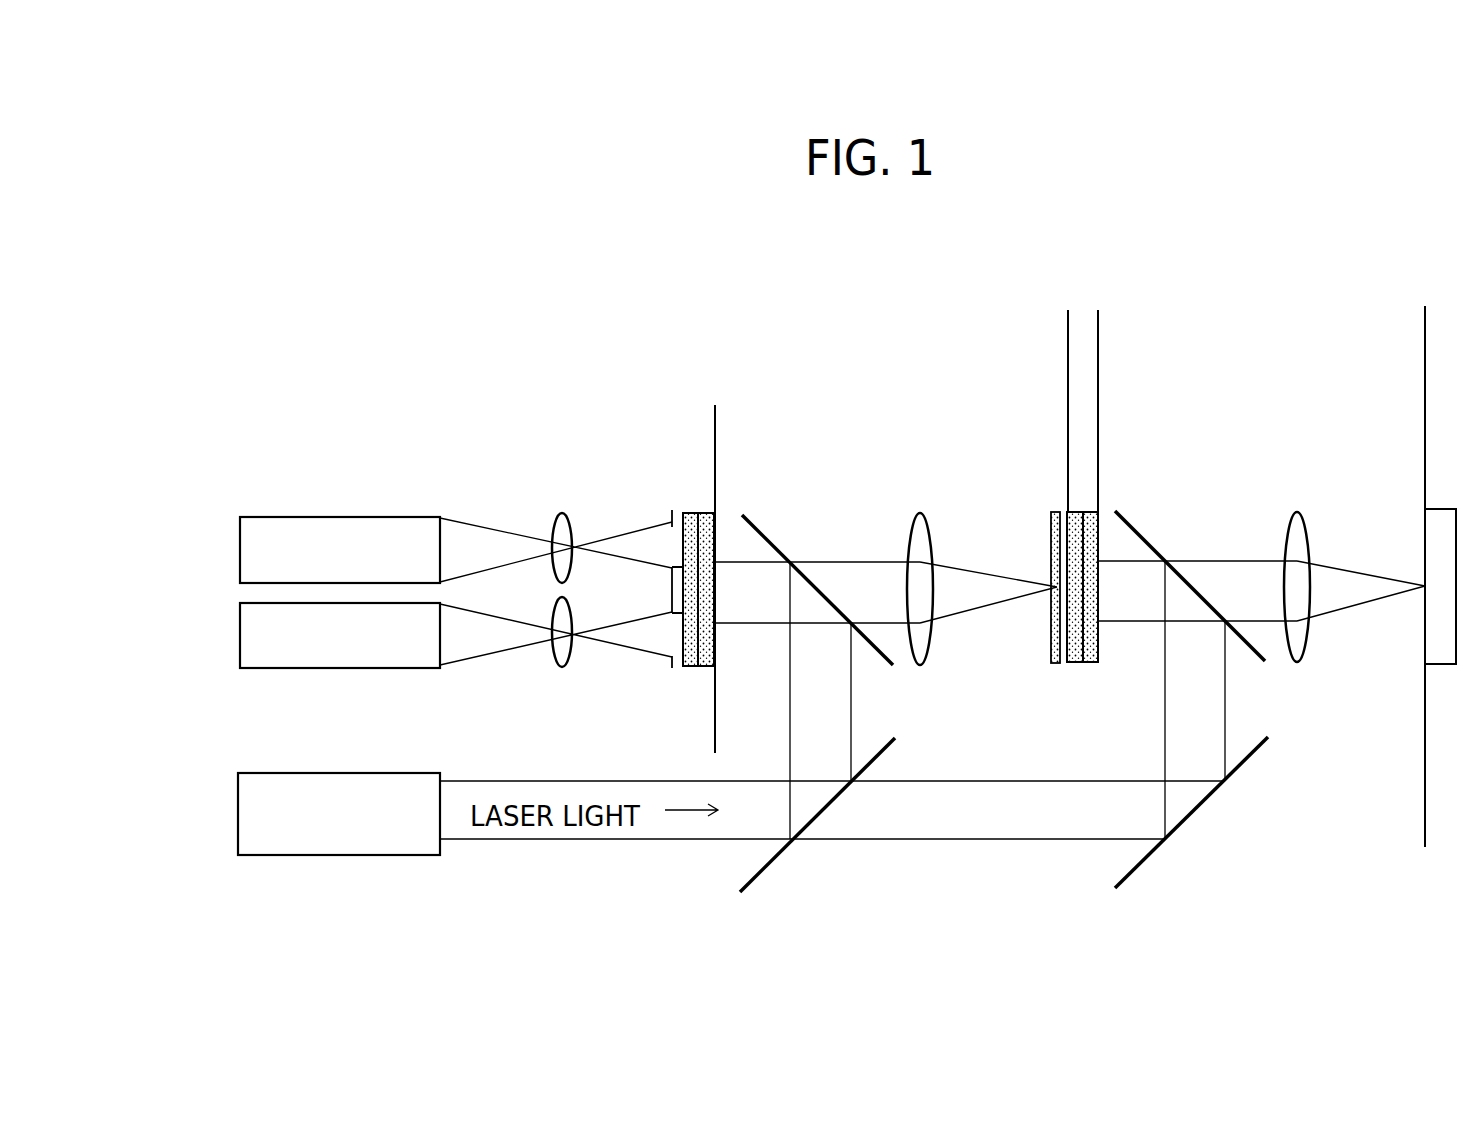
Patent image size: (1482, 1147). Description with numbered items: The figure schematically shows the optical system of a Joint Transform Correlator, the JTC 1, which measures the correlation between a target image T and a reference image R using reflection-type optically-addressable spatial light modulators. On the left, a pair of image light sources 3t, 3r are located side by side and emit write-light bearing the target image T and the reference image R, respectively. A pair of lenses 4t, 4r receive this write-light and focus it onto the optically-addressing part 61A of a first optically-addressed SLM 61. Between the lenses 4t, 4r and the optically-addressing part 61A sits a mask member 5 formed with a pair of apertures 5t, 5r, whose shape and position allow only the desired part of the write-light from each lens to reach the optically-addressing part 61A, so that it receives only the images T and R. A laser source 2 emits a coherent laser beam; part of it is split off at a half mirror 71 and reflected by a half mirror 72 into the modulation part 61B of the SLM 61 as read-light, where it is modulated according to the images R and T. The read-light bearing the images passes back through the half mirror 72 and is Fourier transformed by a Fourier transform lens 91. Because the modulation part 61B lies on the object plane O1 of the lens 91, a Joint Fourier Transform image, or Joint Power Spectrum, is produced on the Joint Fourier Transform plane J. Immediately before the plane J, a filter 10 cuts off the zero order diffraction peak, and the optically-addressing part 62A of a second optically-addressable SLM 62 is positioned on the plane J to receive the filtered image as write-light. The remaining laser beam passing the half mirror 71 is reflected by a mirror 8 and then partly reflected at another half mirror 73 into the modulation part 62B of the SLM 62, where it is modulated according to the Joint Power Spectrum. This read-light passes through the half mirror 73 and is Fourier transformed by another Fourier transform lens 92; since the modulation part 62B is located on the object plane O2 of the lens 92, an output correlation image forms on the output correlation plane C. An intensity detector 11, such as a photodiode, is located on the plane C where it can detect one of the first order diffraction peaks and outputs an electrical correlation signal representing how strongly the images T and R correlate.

The Joint Transform Correlator 1 is at (1198, 290).
The laser source 2 is at (238, 815).
The image light source 3t is at (240, 548).
The image light source 3r is at (240, 633).
The lens 4t is at (562, 512).
The lens 4r is at (562, 668).
The mask member 5 is at (631, 531).
The aperture 5t is at (667, 547).
The aperture 5r is at (670, 633).
The first optically-addressed SLM 61 is at (669, 524).
The optically-addressing part 61A is at (692, 512).
The modulation part 61B is at (707, 512).
The second optically-addressable SLM 62 is at (1057, 639).
The optically-addressing part 62A is at (1072, 665).
The modulation part 62B is at (1092, 665).
The half mirror 71 is at (770, 863).
The half mirror 72 is at (762, 532).
The half mirror 73 is at (1135, 517).
The mirror 8 is at (1152, 853).
The Fourier transform lens 91 is at (920, 512).
The Fourier transform lens 92 is at (1300, 665).
The filter 10 is at (1051, 525).
The intensity detector 11 is at (1440, 665).
The Joint Fourier Transform plane J is at (1068, 338).
The object plane O1 is at (715, 457).
The object plane O2 is at (1098, 340).
The output correlation plane C is at (1423, 559).